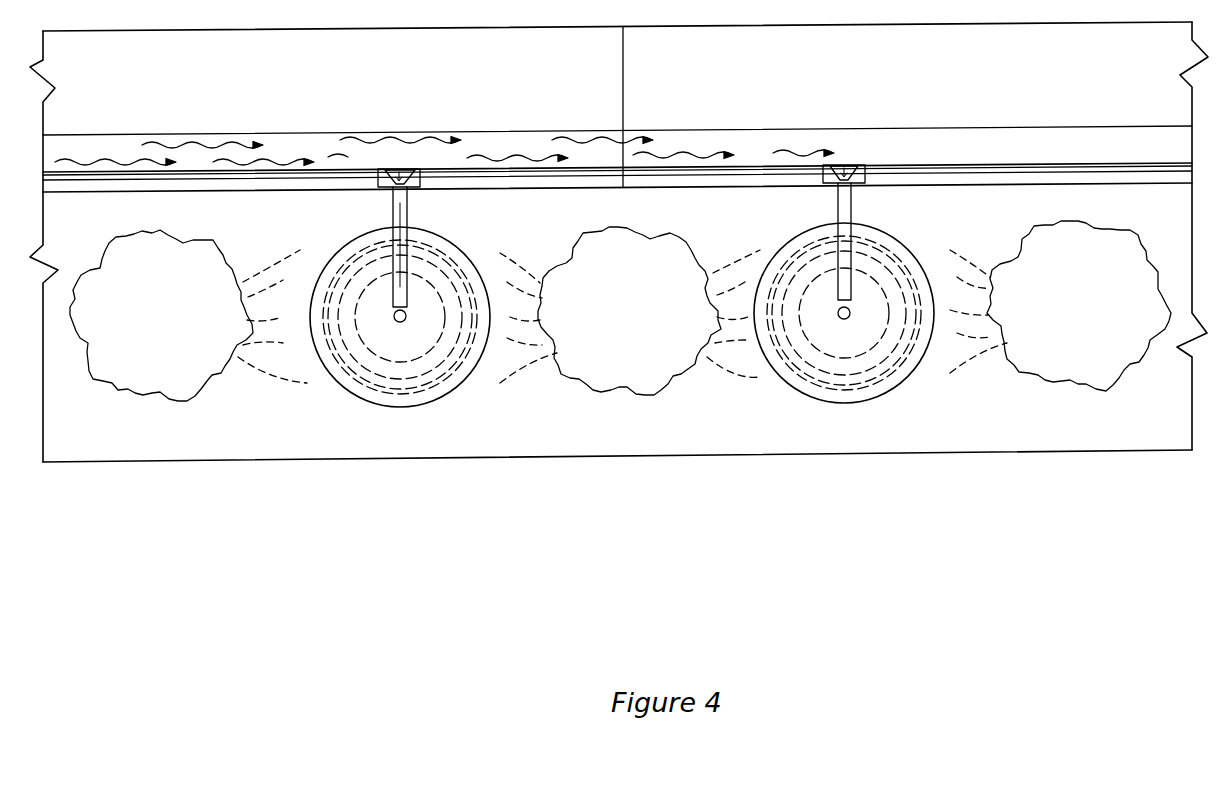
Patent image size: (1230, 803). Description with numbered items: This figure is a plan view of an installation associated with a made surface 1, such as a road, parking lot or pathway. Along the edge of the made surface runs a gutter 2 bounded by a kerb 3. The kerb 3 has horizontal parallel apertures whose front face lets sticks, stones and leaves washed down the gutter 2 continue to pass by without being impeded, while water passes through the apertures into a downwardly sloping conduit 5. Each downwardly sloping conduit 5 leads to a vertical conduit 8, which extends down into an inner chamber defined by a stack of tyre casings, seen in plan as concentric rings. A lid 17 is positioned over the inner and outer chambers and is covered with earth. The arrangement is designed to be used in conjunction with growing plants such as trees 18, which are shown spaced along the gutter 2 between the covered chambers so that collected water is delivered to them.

The made surface 1 is at (405, 100).
The gutter 2 is at (492, 143).
The kerb 3 is at (395, 171).
The downwardly sloping conduit 5 is at (408, 212).
The vertical conduit 8 is at (399, 322).
The lid 17 is at (425, 397).
The trees 18 is at (200, 373).